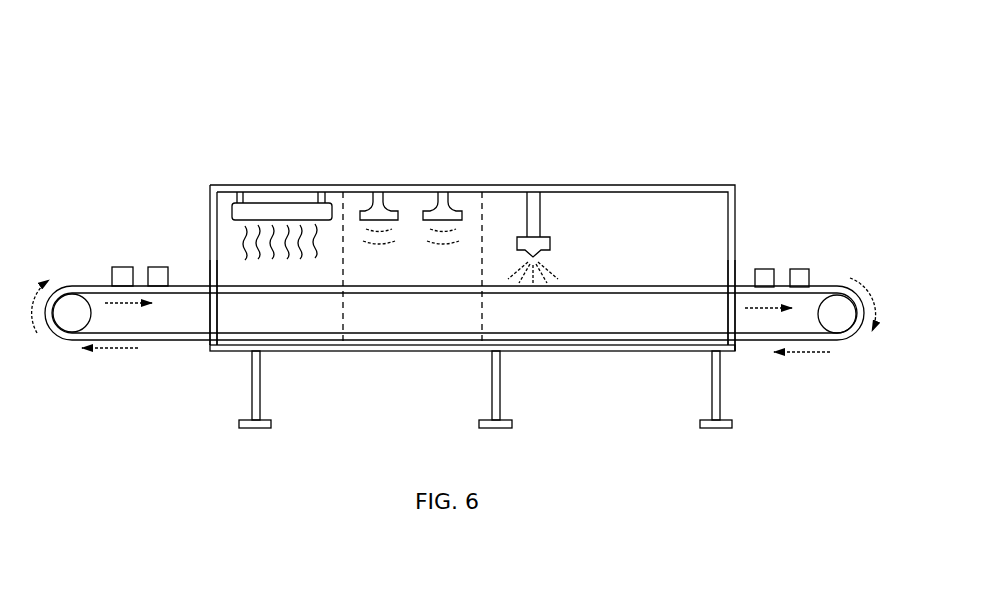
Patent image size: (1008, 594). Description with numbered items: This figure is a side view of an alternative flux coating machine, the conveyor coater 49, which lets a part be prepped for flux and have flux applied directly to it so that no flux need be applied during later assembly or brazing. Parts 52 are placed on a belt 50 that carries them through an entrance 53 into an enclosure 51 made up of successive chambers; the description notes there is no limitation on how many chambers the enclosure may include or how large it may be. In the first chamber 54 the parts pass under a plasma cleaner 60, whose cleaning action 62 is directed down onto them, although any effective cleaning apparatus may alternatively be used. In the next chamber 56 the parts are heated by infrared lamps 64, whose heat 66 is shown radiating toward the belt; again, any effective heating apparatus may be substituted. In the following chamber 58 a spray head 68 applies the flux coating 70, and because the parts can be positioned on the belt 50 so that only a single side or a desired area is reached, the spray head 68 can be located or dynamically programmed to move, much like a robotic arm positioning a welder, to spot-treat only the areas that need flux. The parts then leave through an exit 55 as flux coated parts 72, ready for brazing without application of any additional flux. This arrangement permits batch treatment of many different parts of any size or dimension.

The conveyor coater 49 is at (707, 118).
The belt 50 is at (828, 277).
The housing 51 is at (691, 186).
The articles entering 52 is at (132, 255).
The entrance 53 is at (203, 265).
The heating station 54 is at (282, 230).
The exit 55 is at (744, 262).
The air drying station 56 is at (421, 231).
The spray station 58 is at (550, 202).
The plasma cleaner 60 is at (232, 208).
The heat 62 is at (277, 250).
The infrared lamps 64 is at (440, 209).
The air flow 66 is at (446, 244).
The spray head 68 is at (544, 236).
The flux coating 70 is at (552, 257).
The flux coated part 72 is at (793, 253).